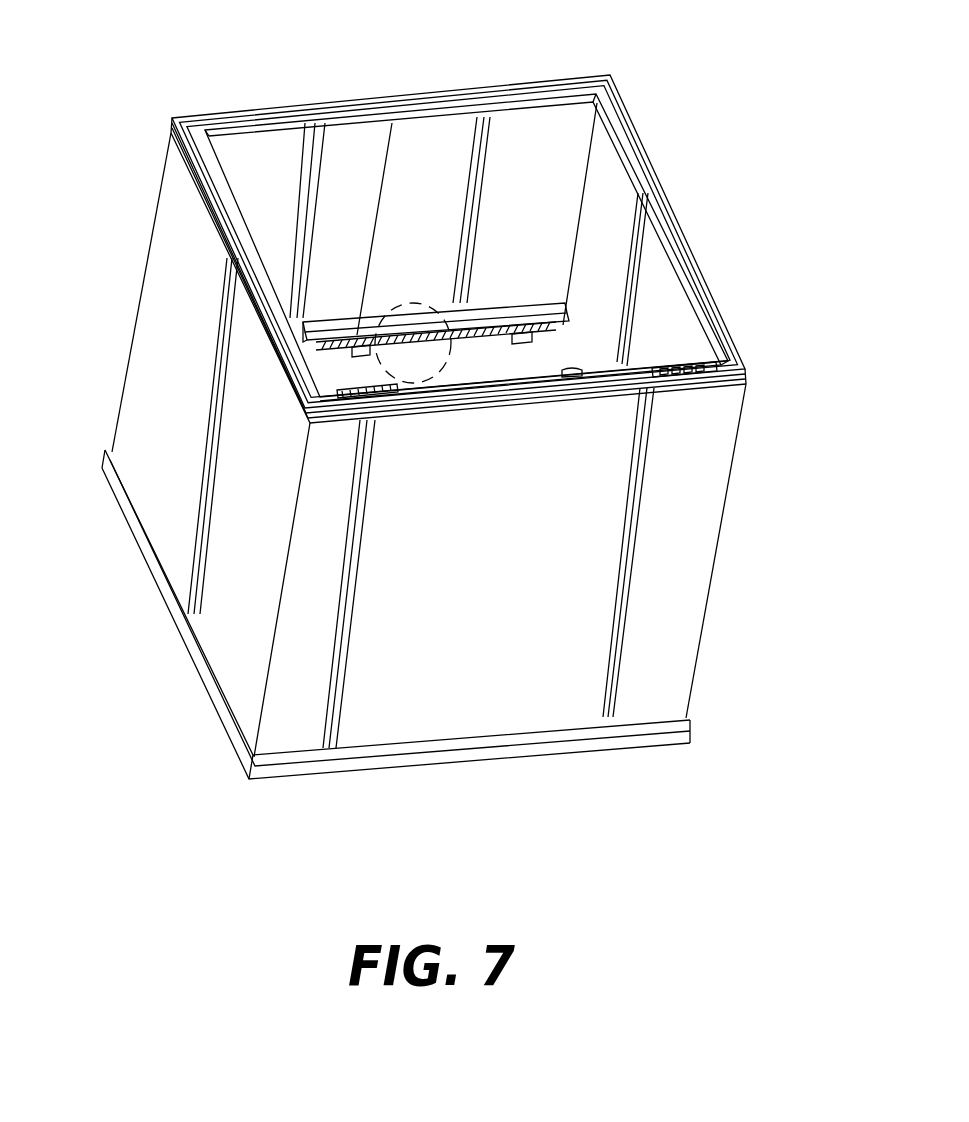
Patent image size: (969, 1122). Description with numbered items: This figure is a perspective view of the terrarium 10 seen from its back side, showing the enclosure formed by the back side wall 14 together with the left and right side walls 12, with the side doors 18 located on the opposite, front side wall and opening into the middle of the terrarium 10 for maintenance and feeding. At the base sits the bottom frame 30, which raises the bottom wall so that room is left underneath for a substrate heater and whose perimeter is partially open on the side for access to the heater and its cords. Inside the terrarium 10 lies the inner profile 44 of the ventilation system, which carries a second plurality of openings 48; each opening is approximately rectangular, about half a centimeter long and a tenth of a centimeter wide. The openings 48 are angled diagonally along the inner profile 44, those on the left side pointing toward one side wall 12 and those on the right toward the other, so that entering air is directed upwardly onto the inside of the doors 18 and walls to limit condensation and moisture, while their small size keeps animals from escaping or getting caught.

The terrarium 10 is at (662, 42).
The left and right side walls 12 is at (165, 312).
The back side wall 14 is at (660, 635).
The side doors 18 is at (297, 134).
The bottom frame 30 is at (240, 768).
The inner profile 44 is at (560, 320).
The second plurality of openings 48 is at (360, 330).